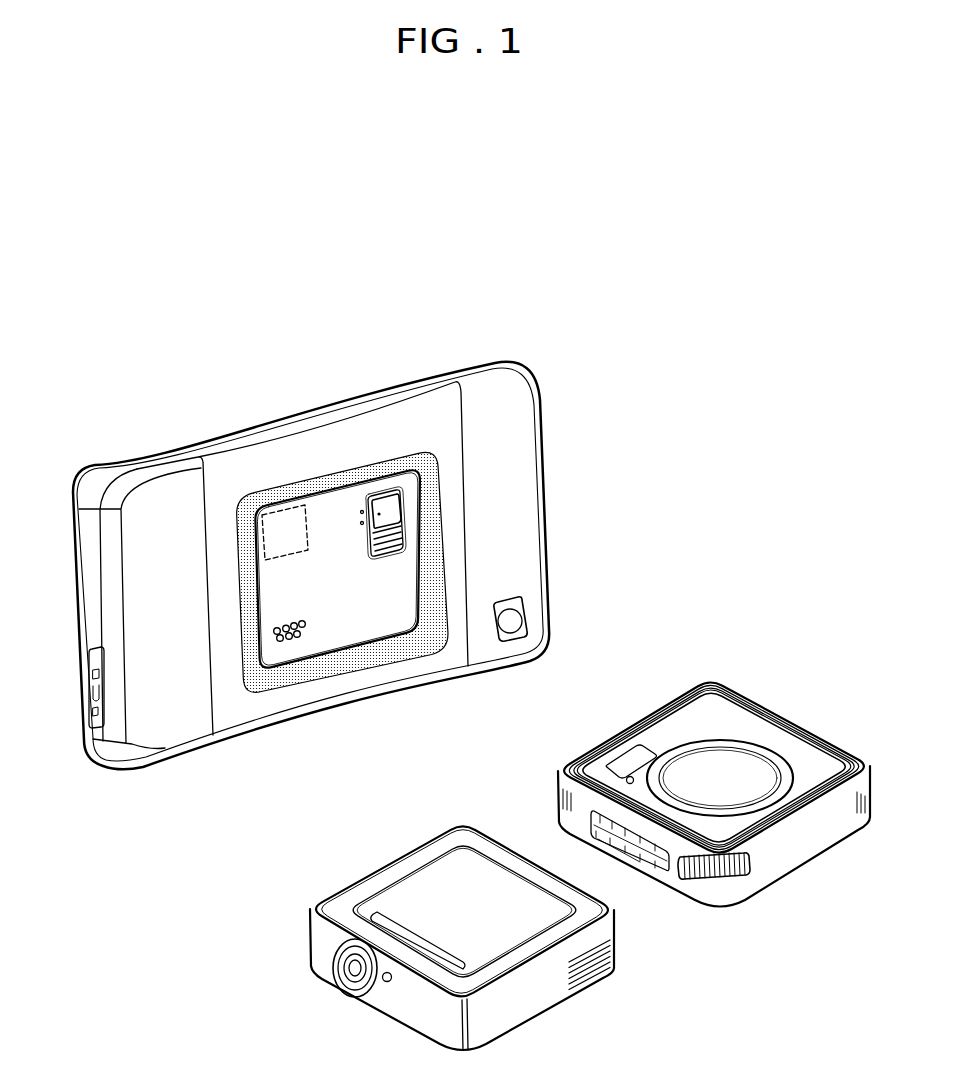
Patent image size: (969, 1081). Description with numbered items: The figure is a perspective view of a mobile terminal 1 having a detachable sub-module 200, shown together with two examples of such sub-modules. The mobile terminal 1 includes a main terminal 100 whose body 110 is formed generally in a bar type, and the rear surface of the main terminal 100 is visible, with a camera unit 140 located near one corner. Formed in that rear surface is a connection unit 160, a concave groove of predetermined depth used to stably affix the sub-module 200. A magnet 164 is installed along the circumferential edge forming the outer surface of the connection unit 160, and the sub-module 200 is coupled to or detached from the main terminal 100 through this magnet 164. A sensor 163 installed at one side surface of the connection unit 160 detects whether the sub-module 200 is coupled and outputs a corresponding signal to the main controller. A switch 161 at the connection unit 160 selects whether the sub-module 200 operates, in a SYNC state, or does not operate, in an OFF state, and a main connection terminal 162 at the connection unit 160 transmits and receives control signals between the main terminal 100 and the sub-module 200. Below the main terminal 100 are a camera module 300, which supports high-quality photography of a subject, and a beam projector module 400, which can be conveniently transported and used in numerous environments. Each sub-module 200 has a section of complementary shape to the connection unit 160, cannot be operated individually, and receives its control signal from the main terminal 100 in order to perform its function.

The mobile terminal 1 is at (755, 321).
The main terminal 100 is at (544, 366).
The body 110 is at (370, 680).
The camera unit 140 is at (511, 620).
The connection unit 160 is at (341, 476).
The switch 161 is at (391, 530).
The main connection terminal 162 is at (291, 637).
The sensor 163 is at (287, 506).
The magnet 164 is at (242, 590).
The sub-module 200 is at (623, 1063).
The camera module 300 is at (793, 842).
The beam projector module 400 is at (527, 992).